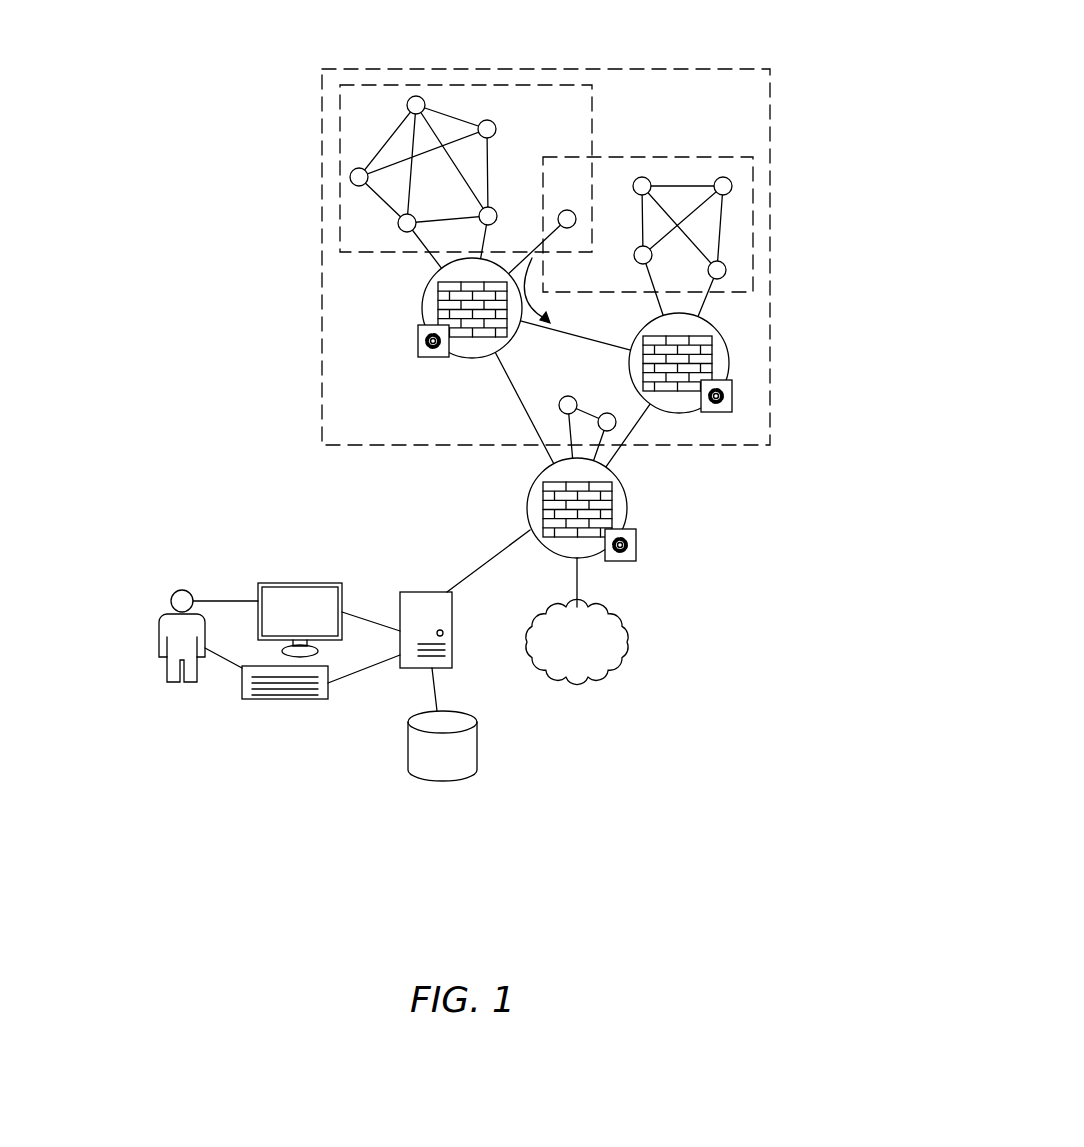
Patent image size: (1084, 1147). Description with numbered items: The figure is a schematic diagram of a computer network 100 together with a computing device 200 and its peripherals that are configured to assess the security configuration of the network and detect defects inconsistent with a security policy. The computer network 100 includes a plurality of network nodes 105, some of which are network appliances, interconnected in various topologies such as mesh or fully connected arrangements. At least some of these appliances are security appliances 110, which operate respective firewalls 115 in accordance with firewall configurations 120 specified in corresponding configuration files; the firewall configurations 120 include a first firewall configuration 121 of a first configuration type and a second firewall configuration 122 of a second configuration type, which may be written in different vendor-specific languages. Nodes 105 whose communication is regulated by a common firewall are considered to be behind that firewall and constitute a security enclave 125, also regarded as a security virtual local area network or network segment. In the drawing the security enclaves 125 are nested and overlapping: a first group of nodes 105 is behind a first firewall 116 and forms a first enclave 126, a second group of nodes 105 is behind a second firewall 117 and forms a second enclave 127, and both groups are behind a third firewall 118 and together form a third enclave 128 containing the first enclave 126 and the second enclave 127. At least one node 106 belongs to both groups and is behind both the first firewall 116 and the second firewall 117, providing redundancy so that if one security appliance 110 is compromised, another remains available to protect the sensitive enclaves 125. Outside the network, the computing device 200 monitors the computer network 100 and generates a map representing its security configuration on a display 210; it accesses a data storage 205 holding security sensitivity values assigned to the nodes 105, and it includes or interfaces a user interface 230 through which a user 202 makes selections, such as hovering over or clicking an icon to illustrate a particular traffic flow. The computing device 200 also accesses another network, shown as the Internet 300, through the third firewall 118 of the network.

The computer network 100 is at (390, 40).
The network nodes 105 is at (407, 106).
The node behind both firewalls 106 is at (568, 210).
The security appliances 110 is at (433, 291).
The firewalls 115 is at (598, 408).
The first firewall 116 is at (448, 302).
The second firewall 117 is at (707, 353).
The third firewall 118 is at (603, 505).
The firewall configurations 120 is at (607, 461).
The first firewall configuration 121 is at (430, 357).
The second firewall configuration 122 is at (731, 405).
The security enclaves 125 is at (535, 257).
The first enclave 126 is at (592, 100).
The second enclave 127 is at (753, 232).
The third enclave 128 is at (322, 420).
The computing device 200 is at (415, 596).
The user 202 is at (175, 593).
The data storage 205 is at (410, 740).
The display 210 is at (297, 590).
The user interface 230 is at (272, 700).
The Internet 300 is at (598, 662).